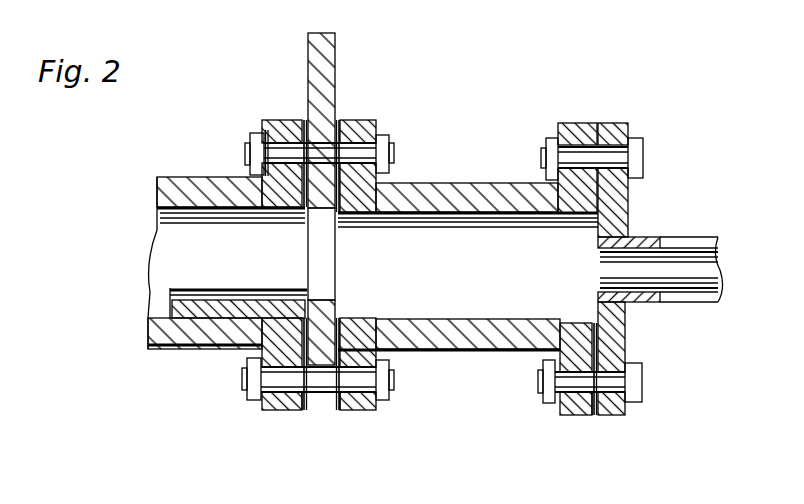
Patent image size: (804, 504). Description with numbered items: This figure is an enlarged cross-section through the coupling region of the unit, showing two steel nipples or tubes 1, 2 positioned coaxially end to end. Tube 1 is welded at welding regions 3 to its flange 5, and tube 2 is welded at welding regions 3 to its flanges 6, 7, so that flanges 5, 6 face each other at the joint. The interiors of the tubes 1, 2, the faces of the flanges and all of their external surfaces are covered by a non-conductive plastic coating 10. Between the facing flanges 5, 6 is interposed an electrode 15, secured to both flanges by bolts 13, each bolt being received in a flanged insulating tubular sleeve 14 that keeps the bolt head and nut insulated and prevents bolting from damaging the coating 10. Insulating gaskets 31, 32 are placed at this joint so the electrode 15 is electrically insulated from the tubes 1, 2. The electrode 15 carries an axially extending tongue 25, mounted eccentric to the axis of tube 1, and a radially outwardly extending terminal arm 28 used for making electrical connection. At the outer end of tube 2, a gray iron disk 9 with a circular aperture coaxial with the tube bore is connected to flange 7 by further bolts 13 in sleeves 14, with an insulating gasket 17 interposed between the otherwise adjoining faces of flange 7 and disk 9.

The steel nipple or tube 1 is at (223, 193).
The steel nipple or tube 2 is at (405, 214).
The welding regions 3 is at (268, 195).
The flange 5 is at (277, 132).
The flange 6 is at (362, 125).
The flange 7 is at (573, 128).
The disk 9 is at (618, 137).
The coating 10 is at (473, 320).
The bolts 13 is at (388, 152).
The insulating tubular sleeve 14 is at (316, 392).
The electrode 15 is at (318, 255).
The insulating gasket 17 is at (597, 412).
The tongue 25 is at (250, 275).
The terminal arm 28 is at (325, 82).
The insulating gasket 31 is at (332, 410).
The insulating gasket 32 is at (303, 410).